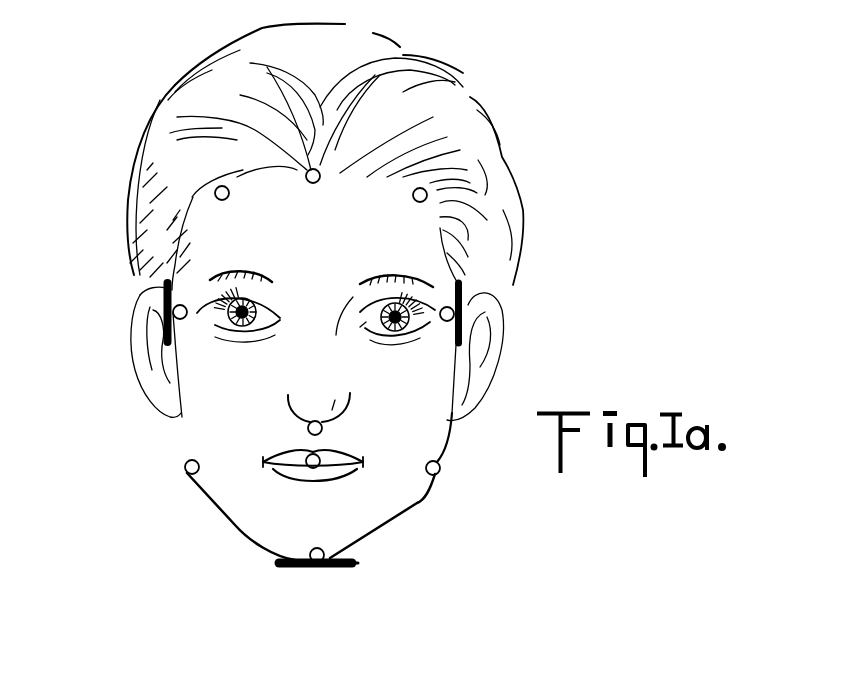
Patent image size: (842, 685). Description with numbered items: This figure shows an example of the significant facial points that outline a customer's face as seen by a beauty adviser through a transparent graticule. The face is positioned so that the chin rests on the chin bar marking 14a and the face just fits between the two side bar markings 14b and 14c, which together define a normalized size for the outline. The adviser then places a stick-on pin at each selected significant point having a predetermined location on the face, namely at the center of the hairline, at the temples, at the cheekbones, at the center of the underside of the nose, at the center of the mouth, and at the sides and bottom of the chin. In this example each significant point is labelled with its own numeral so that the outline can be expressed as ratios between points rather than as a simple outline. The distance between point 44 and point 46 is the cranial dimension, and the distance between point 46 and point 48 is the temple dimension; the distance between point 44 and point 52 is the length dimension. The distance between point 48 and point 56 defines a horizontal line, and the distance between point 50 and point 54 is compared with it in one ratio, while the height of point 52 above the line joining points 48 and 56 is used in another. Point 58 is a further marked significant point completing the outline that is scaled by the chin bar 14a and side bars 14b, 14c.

The chin bar marking 14a is at (358, 564).
The side bar marking 14b is at (167, 332).
The side bar marking 14c is at (462, 332).
The significant facial point 44 is at (319, 172).
The significant facial point 46 is at (416, 200).
The significant facial point 48 is at (441, 320).
The significant facial point 50 is at (440, 470).
The significant facial point 52 is at (316, 562).
The significant facial point 54 is at (185, 470).
The significant facial point 56 is at (182, 319).
The significant facial point 58 is at (222, 200).